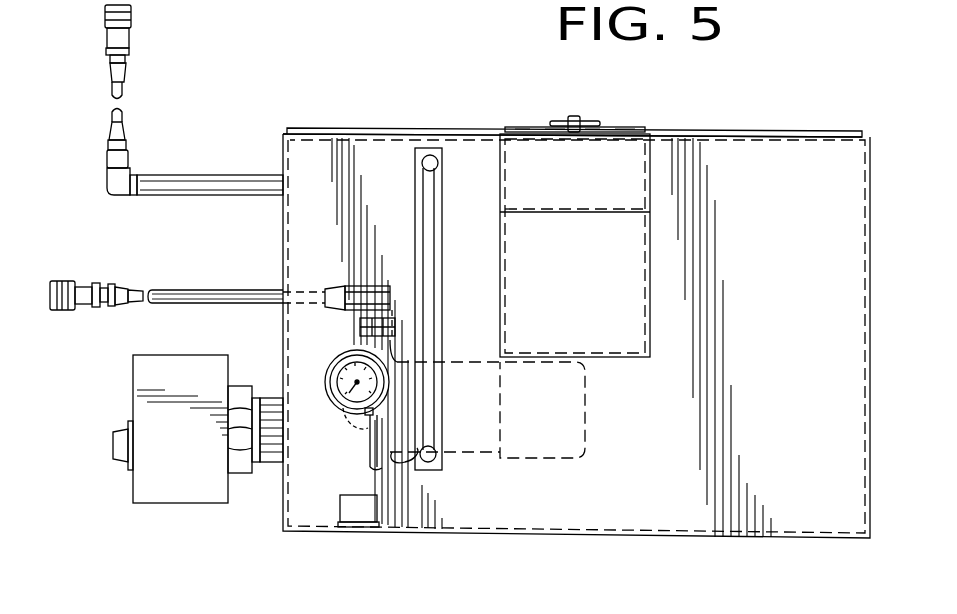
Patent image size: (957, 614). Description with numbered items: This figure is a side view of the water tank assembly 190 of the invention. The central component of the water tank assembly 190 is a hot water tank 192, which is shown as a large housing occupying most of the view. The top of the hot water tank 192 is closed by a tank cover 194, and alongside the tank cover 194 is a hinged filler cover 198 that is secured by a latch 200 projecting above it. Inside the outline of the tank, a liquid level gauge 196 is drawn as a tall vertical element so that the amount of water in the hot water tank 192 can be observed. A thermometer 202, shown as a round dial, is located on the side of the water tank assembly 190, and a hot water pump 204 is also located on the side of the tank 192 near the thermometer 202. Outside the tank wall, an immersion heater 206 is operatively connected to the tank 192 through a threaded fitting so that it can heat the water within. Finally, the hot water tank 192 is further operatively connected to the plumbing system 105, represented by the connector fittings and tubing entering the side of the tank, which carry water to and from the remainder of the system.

The plumbing system 105 is at (118, 198).
The water tank assembly 190 is at (443, 539).
The hot water tank 192 is at (806, 165).
The tank cover 194 is at (411, 130).
The liquid level gauge 196 is at (417, 195).
The hinged filler cover 198 is at (523, 128).
The latch 200 is at (589, 119).
The thermometer 202 is at (330, 404).
The hot water pump 204 is at (380, 466).
The immersion heater 206 is at (113, 443).